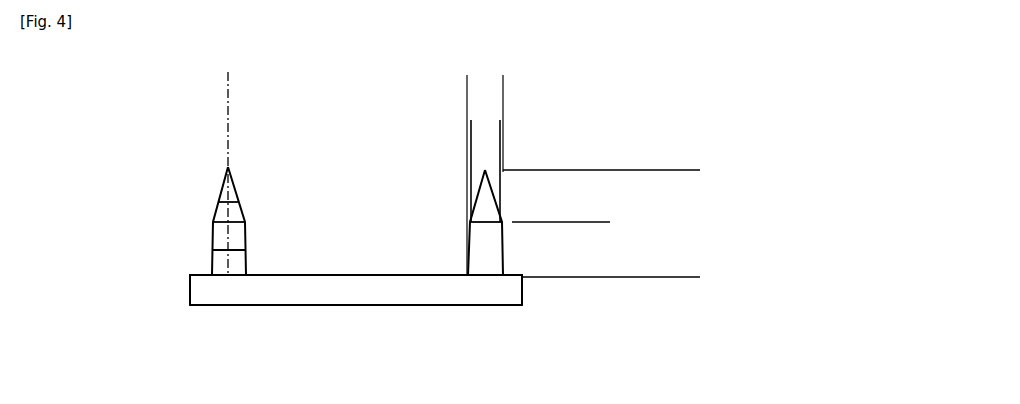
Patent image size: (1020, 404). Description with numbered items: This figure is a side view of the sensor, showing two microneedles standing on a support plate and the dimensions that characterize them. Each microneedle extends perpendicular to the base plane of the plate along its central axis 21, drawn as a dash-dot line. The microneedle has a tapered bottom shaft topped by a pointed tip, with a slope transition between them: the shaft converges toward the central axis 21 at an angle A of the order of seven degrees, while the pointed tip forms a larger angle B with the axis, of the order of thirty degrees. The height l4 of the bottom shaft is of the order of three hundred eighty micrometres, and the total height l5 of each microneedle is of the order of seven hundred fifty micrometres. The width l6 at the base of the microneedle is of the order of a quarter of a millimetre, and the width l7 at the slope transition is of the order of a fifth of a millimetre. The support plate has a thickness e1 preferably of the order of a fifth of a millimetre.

The central axis 21 is at (226, 123).
The converging angle of the bottom shaft A is at (160, 243).
The angle of the pointed tip B is at (212, 193).
The thickness of the support plate e1 is at (178, 277).
The height of the bottom shaft l4 is at (595, 170).
The total height of the microneedle l5 is at (686, 277).
The width at the base of the microneedle l6 is at (415, 85).
The width of the microneedle at the slope transition l7 is at (420, 133).